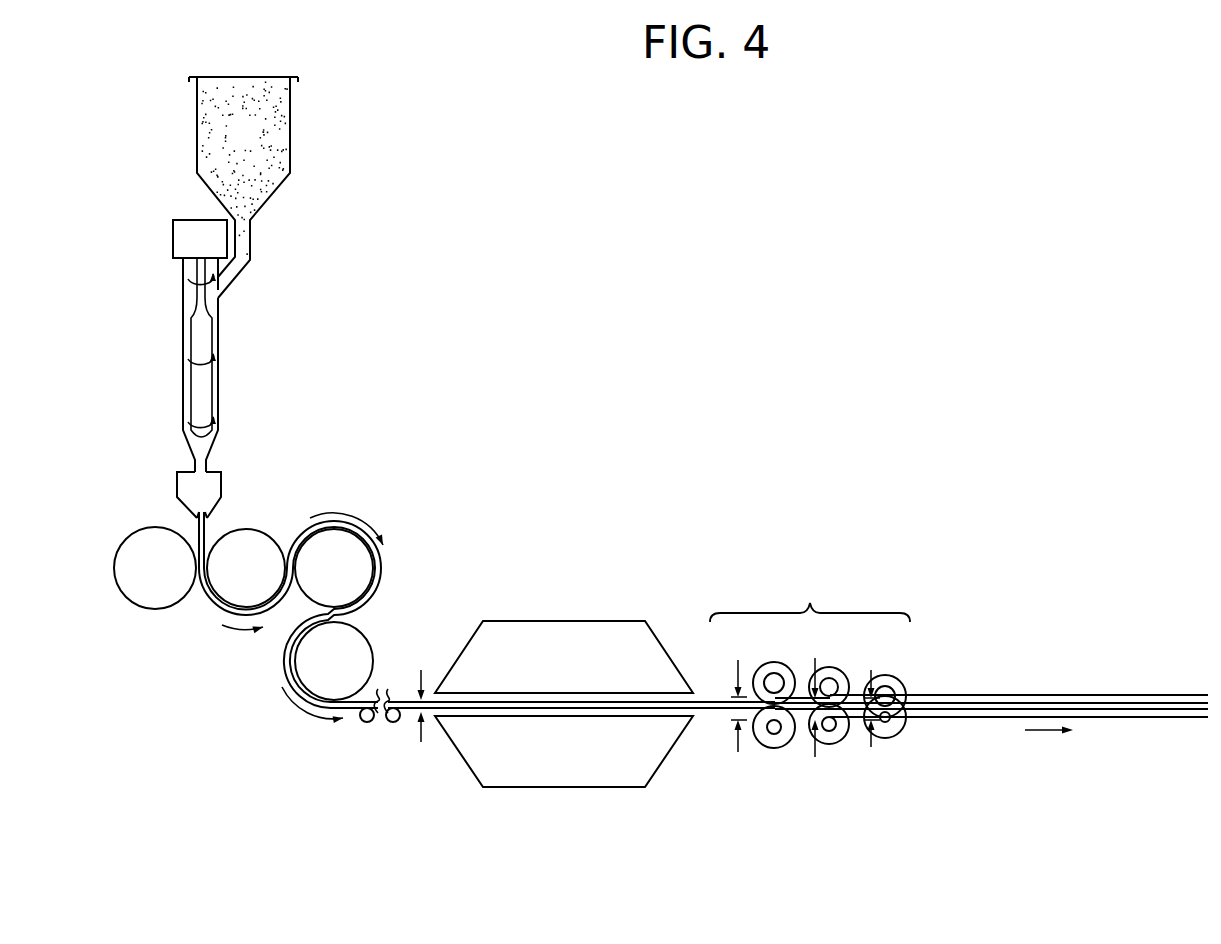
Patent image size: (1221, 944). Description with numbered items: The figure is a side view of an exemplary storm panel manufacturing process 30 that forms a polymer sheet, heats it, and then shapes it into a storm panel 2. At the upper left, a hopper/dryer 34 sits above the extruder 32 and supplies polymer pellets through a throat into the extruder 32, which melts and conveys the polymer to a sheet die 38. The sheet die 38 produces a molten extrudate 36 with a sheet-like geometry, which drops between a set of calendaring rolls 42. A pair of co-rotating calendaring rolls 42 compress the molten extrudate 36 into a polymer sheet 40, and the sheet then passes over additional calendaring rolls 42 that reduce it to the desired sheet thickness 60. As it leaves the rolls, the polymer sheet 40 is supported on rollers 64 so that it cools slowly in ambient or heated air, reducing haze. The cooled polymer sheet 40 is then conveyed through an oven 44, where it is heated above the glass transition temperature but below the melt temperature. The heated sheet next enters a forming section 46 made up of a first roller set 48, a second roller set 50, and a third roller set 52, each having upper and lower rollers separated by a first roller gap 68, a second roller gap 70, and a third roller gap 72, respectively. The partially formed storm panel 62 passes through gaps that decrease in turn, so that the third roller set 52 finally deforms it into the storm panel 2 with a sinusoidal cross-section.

The storm panel 2 is at (1022, 700).
The storm panel manufacturing process 30 is at (463, 212).
The extruder 32 is at (183, 340).
The hopper/dryer 34 is at (229, 149).
The molten extrudate 36 is at (215, 518).
The sheet die 38 is at (232, 478).
The polymer sheet 40 is at (398, 682).
The calendaring rolls 42 is at (348, 675).
The oven 44 is at (544, 674).
The forming section 46 is at (810, 596).
The first roller set 48 is at (773, 760).
The second roller set 50 is at (830, 761).
The third roller set 52 is at (894, 758).
The sheet thickness 60 is at (420, 722).
The partially formed storm panel 62 is at (801, 735).
The rollers 64 is at (367, 722).
The first roller gap 68 is at (737, 693).
The second roller gap 70 is at (815, 693).
The third roller gap 72 is at (870, 693).